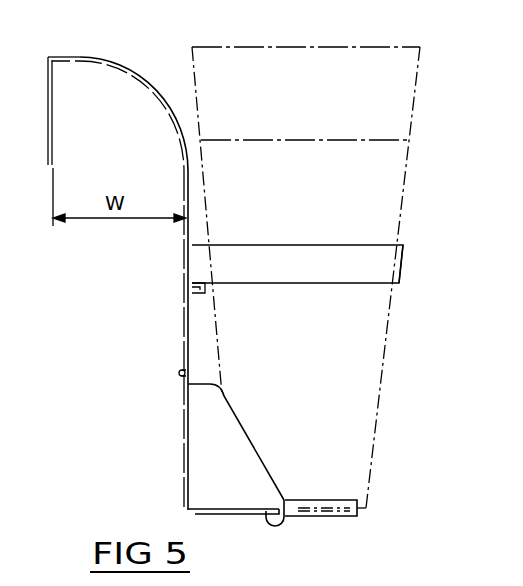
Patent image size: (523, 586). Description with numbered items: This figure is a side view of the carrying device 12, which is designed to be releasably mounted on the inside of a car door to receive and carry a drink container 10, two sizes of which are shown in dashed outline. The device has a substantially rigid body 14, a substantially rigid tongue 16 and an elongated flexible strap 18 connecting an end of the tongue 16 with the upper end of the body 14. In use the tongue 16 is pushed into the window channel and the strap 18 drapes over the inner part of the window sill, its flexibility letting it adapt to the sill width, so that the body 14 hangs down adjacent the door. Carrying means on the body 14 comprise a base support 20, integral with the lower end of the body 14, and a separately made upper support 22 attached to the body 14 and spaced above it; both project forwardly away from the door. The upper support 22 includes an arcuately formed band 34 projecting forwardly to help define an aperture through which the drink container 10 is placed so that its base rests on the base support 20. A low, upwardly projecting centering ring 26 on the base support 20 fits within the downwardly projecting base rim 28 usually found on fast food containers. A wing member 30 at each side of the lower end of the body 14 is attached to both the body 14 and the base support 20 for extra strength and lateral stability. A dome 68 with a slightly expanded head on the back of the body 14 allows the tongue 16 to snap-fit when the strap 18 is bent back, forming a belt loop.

The drink container 10 is at (402, 196).
The carrying device 12 is at (106, 260).
The body 14 is at (184, 348).
The tongue 16 is at (52, 127).
The strap 18 is at (122, 68).
The base support 20 is at (305, 515).
The upper support 22 is at (405, 266).
The centering ring 26 is at (323, 500).
The base rim 28 is at (366, 508).
The wing member 30 is at (218, 480).
The band 34 is at (381, 278).
The dome 68 is at (178, 374).